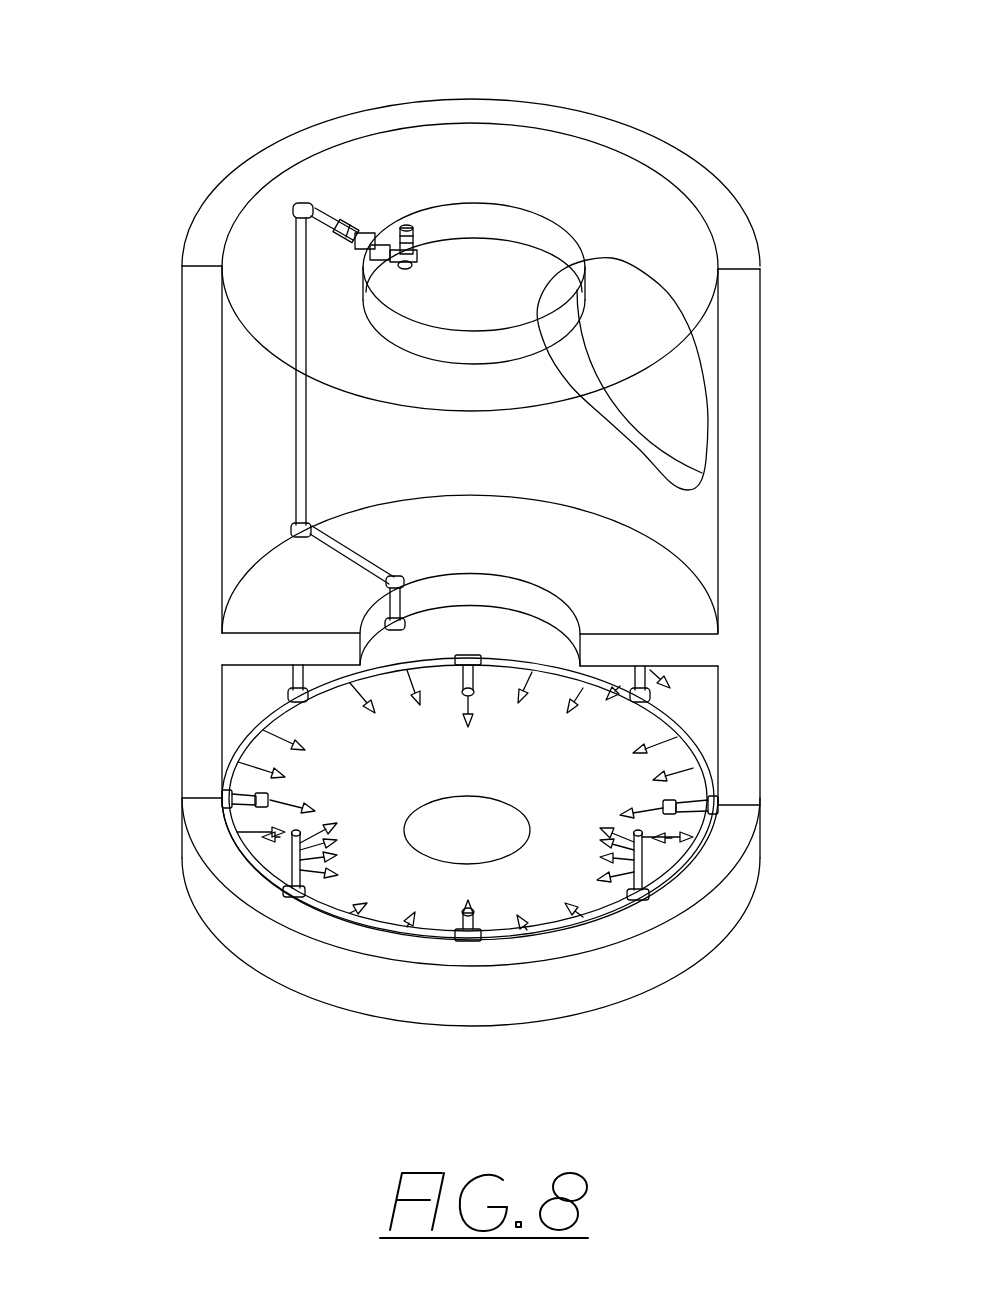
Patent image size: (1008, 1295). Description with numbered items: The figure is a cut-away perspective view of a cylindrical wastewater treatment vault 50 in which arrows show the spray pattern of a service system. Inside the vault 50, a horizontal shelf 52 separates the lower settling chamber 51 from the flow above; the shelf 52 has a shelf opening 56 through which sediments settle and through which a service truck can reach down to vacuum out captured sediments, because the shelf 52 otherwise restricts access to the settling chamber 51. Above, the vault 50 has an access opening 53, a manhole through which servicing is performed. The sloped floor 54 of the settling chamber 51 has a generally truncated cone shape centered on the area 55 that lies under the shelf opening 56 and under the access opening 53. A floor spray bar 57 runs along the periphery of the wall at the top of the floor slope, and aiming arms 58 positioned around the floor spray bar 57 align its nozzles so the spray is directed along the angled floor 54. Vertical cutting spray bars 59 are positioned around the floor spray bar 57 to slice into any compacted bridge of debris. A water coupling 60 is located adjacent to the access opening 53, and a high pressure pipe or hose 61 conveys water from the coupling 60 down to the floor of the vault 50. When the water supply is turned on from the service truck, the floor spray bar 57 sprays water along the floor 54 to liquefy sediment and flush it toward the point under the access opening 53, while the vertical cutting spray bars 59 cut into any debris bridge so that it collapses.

The cylindrical wastewater treatment vault 50 is at (733, 150).
The settling chamber 51 is at (719, 700).
The horizontal shelf 52 is at (690, 600).
The access opening 53 is at (506, 206).
The sloped floor 54 is at (366, 883).
The area under the shelf opening 55 is at (464, 858).
The shelf opening 56 is at (488, 572).
The floor spray bar 57 is at (706, 882).
The aiming arm 58 is at (718, 786).
The vertical cutting spray bar 59 is at (263, 864).
The water coupling 60 is at (407, 202).
The high pressure pipe or hose 61 is at (270, 393).